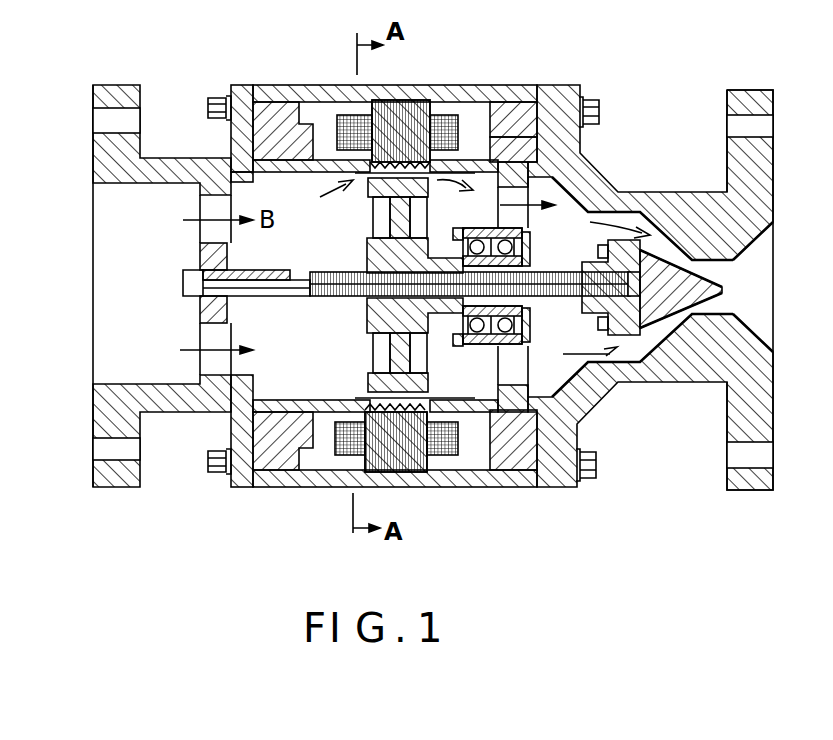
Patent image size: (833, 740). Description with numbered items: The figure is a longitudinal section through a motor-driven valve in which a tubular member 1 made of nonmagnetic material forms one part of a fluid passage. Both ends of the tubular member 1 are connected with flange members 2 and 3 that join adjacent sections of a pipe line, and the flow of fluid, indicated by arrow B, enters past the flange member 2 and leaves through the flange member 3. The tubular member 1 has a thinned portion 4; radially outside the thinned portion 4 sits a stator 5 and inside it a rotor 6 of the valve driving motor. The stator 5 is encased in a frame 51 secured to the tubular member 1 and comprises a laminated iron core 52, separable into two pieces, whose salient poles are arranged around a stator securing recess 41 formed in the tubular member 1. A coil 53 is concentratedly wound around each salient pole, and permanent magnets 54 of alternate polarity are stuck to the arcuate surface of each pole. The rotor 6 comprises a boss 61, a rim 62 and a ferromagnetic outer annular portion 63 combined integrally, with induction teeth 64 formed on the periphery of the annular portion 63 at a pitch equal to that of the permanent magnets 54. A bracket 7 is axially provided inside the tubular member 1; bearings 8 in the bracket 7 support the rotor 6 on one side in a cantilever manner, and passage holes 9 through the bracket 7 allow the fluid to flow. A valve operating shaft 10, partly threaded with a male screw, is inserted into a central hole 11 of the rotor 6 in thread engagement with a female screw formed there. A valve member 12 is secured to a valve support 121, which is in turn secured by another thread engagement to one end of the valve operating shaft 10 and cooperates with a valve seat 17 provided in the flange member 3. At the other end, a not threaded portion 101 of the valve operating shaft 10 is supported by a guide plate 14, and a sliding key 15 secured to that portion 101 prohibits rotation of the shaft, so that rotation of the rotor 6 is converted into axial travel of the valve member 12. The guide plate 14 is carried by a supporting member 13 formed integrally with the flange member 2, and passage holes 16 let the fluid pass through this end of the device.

The tubular member 1 is at (512, 130).
The flange member 2 is at (111, 90).
The flange member 3 is at (755, 93).
The thinned portion 4 is at (363, 178).
The stator 5 is at (323, 130).
The rotor 6 is at (363, 345).
The bracket 7 is at (508, 173).
The bearings 8 is at (523, 256).
The passage holes 9 is at (520, 193).
The valve operating shaft 10 is at (557, 296).
The central hole 11 is at (537, 276).
The valve member 12 is at (717, 290).
The supporting member 13 is at (203, 335).
The guide plate 14 is at (203, 303).
The sliding key 15 is at (203, 262).
The passage holes 16 is at (213, 205).
The valve seat 17 is at (748, 238).
The stator securing recess 41 is at (437, 163).
The frame 51 is at (508, 148).
The laminated iron core 52 is at (418, 100).
The coil 53 is at (340, 120).
The permanent magnets 54 is at (427, 178).
The boss 61 is at (373, 306).
The rim 62 is at (402, 350).
The outer annular portion 63 is at (377, 380).
The induction teeth 64 is at (428, 388).
The not threaded portion 101 is at (270, 290).
The valve support 121 is at (605, 335).